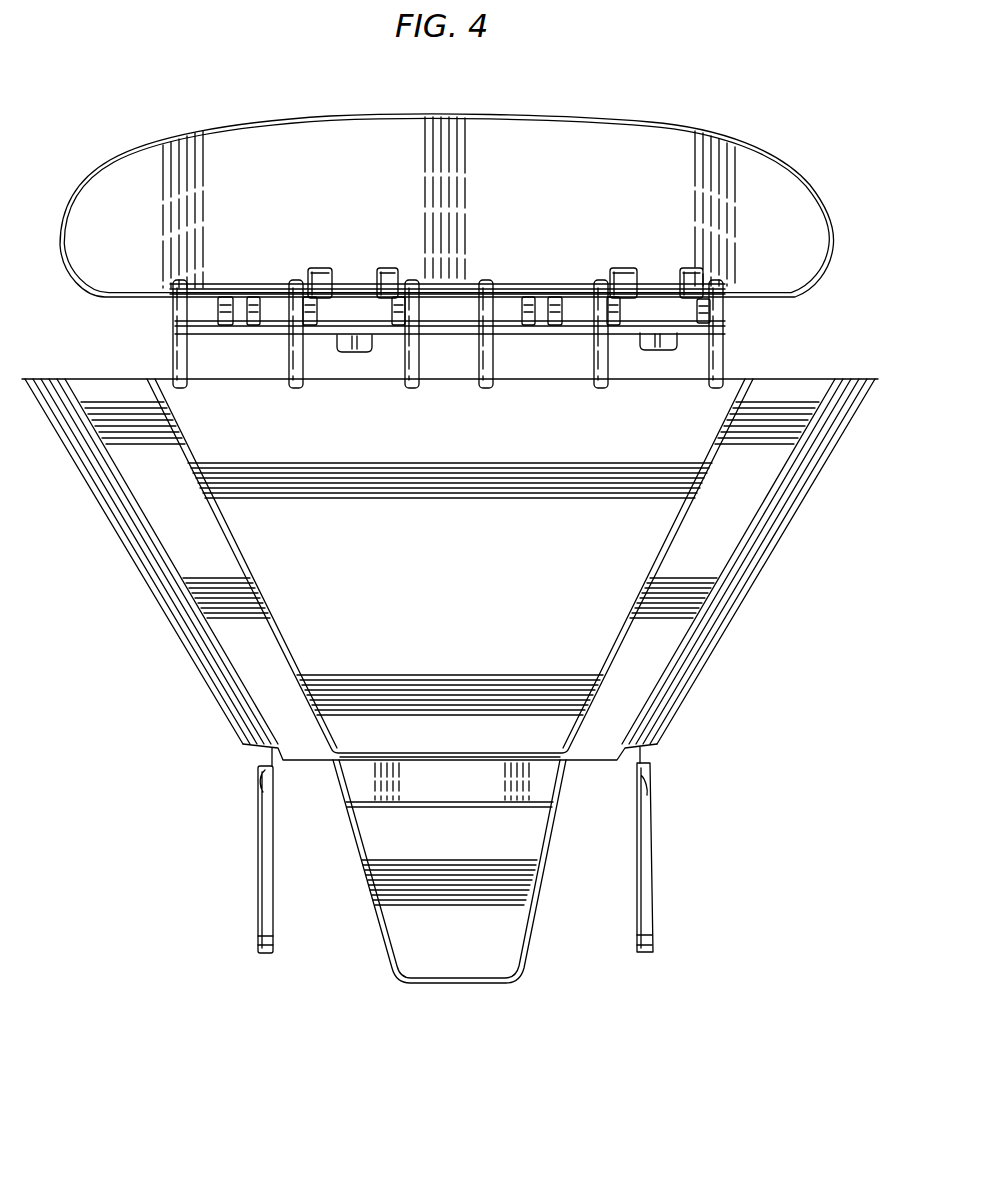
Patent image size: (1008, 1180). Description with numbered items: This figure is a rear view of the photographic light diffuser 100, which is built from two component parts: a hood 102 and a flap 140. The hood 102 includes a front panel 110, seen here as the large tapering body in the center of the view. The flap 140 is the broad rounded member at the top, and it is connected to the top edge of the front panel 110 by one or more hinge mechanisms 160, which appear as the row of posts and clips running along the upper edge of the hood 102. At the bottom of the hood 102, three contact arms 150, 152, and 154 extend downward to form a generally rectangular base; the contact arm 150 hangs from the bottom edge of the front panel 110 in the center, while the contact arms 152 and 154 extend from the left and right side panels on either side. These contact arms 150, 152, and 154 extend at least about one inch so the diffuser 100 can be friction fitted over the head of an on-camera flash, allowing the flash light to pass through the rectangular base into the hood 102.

The diffuser 100 is at (786, 126).
The flap 140 is at (523, 115).
The hinge mechanisms 160 is at (727, 334).
The hood 102 is at (781, 572).
The front panel 110 is at (553, 650).
The contact arm 150 is at (464, 964).
The contact arm 152 is at (257, 871).
The contact arm 154 is at (654, 873).